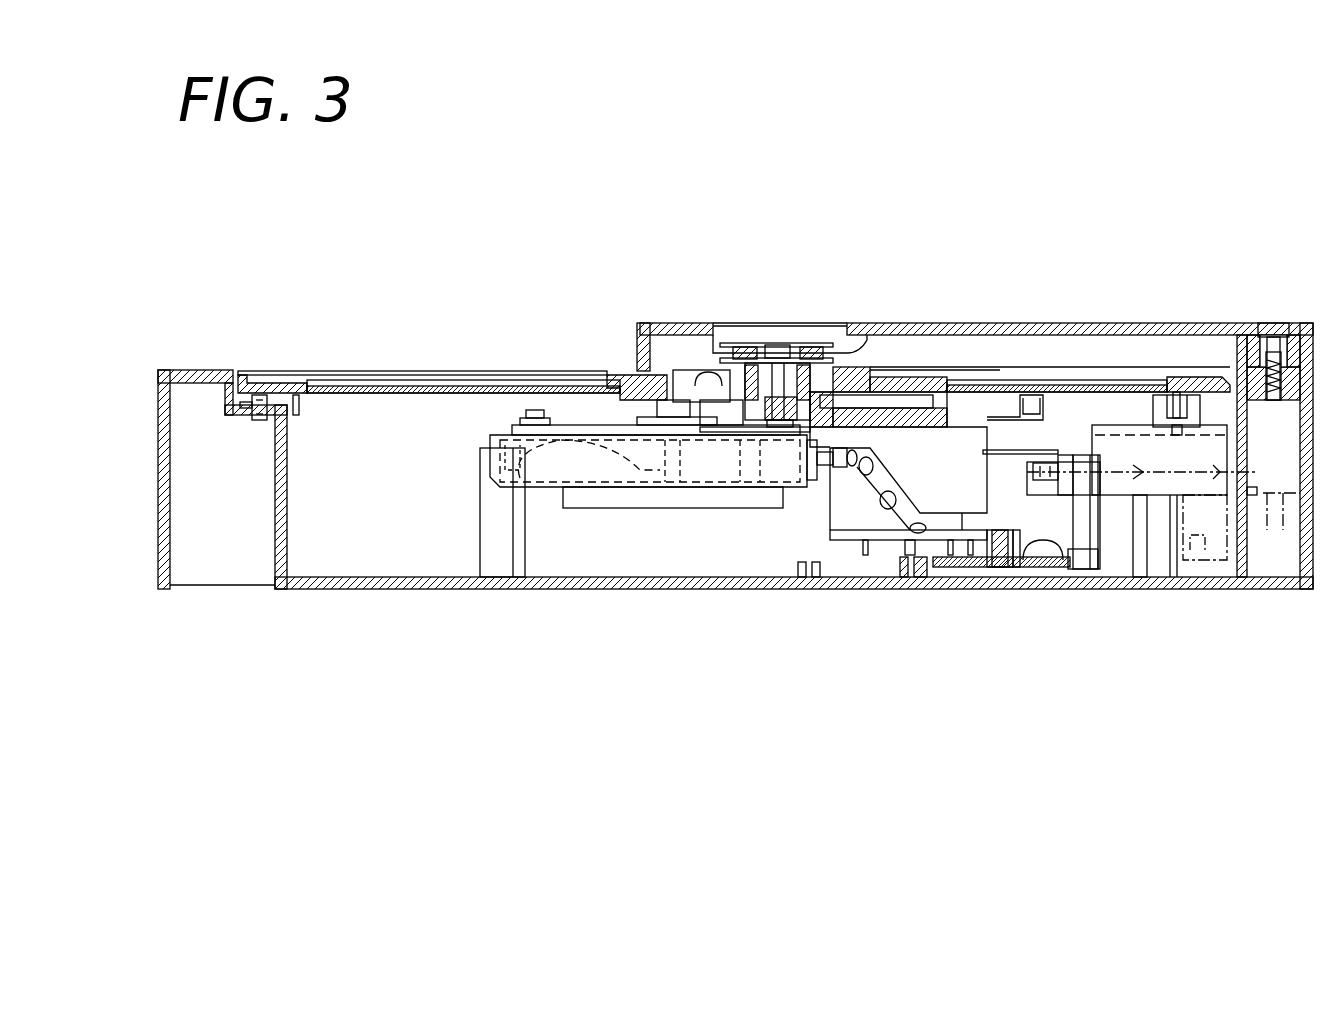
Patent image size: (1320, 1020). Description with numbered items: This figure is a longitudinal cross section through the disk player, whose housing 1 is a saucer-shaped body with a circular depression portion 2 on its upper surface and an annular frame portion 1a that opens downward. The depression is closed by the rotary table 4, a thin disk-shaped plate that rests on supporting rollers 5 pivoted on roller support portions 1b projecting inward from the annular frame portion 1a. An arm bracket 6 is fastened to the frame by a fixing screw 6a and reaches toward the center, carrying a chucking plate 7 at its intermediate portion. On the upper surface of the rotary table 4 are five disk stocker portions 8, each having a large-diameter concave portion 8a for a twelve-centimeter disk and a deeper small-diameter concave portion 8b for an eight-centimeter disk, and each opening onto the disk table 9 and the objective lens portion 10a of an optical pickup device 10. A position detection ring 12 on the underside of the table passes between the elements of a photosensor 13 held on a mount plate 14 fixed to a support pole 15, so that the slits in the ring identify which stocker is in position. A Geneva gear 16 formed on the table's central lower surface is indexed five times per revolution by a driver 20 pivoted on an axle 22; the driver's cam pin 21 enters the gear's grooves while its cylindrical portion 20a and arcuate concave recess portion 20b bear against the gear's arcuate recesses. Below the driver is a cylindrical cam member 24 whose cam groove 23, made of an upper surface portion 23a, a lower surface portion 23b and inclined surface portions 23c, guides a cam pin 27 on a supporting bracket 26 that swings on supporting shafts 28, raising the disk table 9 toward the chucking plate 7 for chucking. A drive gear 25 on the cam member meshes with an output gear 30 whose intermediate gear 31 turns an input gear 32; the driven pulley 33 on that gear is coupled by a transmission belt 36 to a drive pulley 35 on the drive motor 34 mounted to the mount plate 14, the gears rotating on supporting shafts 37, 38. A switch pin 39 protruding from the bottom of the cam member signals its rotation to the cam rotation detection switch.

The housing 1 is at (580, 590).
The annular frame portion 1a is at (203, 367).
The roller support portion 1b is at (290, 525).
The circular depression portion 2 is at (372, 574).
The rotary table 4 is at (497, 371).
The supporting roller 5 is at (258, 420).
The arm bracket 6 is at (1120, 326).
The fixing screw 6a is at (1272, 330).
The chucking plate 7 is at (745, 345).
The disk stocker portion 8 is at (429, 313).
The large-diameter concave portion 8a is at (280, 385).
The small-diameter concave portion 8b is at (303, 282).
The disk table 9 is at (810, 385).
The optical pickup device 10 is at (672, 392).
The objective lens portion 10a is at (703, 374).
The position detection ring 12 is at (300, 407).
The photosensor 13 is at (1195, 400).
The mount plate 14 is at (1165, 395).
The support pole 15 is at (1157, 560).
The Geneva gear 16 is at (600, 375).
The driver 20 is at (1031, 286).
The cylindrical portion 20a is at (850, 370).
The arcuate concave recess portion 20b is at (957, 390).
The cam pin 21 is at (1047, 395).
The axle 22 is at (907, 579).
The cam groove 23 is at (845, 606).
The upper surface portion 23a is at (866, 476).
The lower surface portion 23b is at (912, 533).
The inclined surface portion 23c is at (888, 510).
The cam member 24 is at (1000, 395).
The drive gear 25 is at (800, 565).
The supporting bracket 26 is at (655, 490).
The cam pin 27 is at (830, 480).
The supporting shaft 28 is at (502, 557).
The output gear 30 is at (1053, 589).
The intermediate gear 31 is at (1023, 589).
The input gear 32 is at (1112, 589).
The driven pulley 33 is at (1133, 589).
The drive motor 34 is at (1290, 560).
The drive pulley 35 is at (1265, 560).
The transmission belt 36 is at (1195, 562).
The supporting shaft 37 is at (1083, 589).
The supporting shaft 38 is at (997, 589).
The switch pin 39 is at (967, 590).